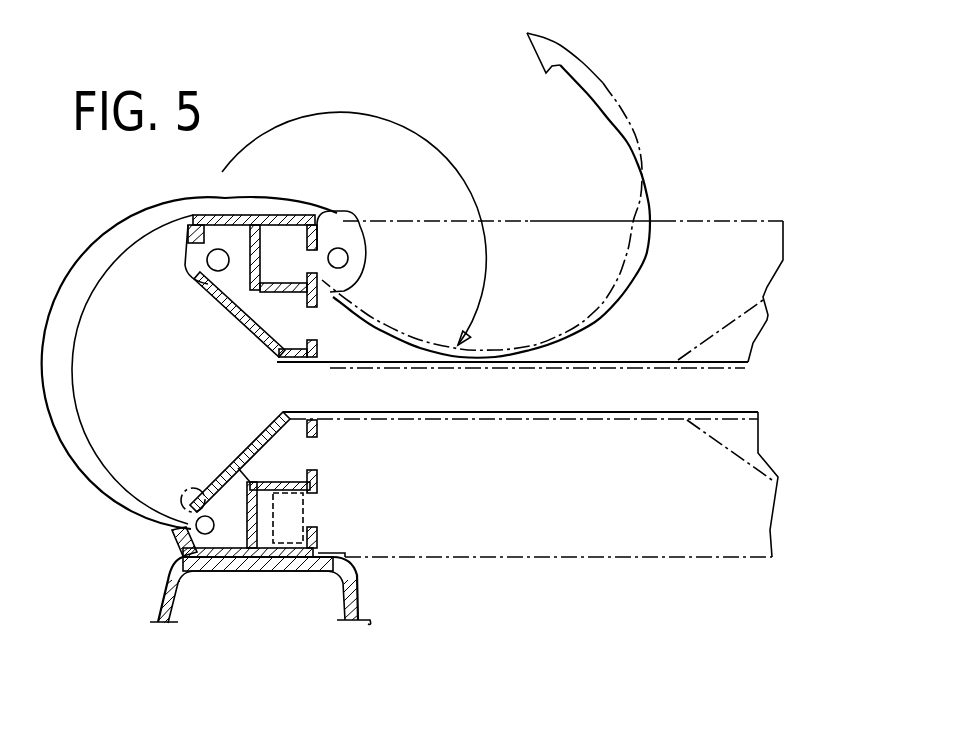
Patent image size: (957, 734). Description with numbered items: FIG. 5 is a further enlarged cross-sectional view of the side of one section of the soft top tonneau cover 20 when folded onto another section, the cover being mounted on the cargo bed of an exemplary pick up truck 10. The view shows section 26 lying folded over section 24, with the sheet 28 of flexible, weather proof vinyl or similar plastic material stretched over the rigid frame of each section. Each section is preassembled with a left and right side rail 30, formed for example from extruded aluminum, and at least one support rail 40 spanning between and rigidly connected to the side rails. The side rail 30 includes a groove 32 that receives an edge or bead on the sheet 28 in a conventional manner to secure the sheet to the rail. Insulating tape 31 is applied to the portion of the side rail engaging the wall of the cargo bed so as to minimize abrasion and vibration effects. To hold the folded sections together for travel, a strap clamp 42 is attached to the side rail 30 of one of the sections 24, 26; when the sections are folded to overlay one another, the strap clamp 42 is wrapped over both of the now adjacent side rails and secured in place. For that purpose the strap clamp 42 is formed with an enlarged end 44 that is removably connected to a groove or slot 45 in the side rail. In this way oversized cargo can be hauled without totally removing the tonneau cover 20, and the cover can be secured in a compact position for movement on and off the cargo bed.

The pick up truck 10 is at (230, 586).
The tonneau cover 20 is at (565, 577).
The section 24 is at (773, 437).
The section 26 is at (777, 270).
The sheet 28 is at (497, 405).
The side rail 30 is at (232, 306).
The insulating tape 31 is at (260, 217).
The groove 32 is at (228, 287).
The support rail 40 is at (662, 220).
The strap clamp 42 is at (605, 82).
The enlarged end 44 is at (221, 560).
The groove or slot 45 is at (203, 508).